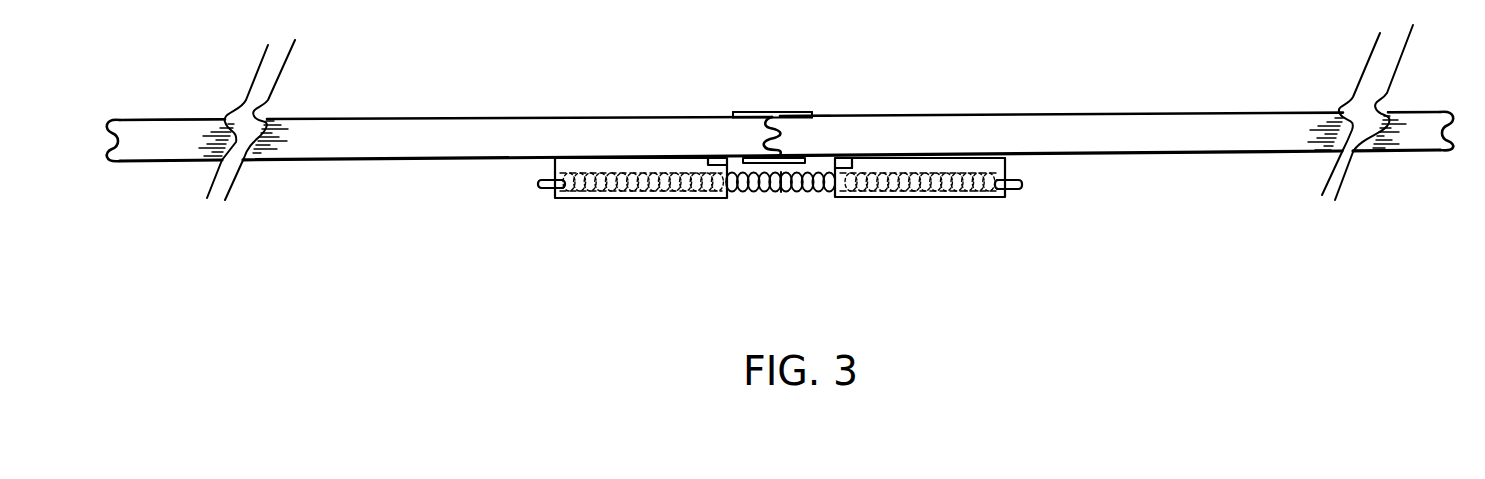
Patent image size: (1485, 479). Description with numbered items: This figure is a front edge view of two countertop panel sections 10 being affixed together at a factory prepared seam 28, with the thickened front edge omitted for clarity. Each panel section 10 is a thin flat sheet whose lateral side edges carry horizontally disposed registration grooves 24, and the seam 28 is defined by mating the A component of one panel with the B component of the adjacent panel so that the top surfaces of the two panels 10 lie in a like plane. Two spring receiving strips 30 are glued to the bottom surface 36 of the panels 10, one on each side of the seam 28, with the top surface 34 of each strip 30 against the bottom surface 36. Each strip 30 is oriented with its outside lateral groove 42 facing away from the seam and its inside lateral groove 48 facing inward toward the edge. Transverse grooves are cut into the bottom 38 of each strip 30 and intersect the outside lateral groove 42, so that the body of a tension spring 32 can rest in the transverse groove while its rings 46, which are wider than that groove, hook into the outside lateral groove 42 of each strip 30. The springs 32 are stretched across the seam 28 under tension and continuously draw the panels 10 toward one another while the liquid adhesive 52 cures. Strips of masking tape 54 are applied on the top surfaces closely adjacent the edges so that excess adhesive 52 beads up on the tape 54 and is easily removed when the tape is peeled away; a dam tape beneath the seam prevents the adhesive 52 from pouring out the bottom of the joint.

The panel section 10 is at (442, 118).
The A component of registration grooves A is at (120, 125).
The B component of registration grooves B is at (775, 111).
The registration grooves 24 is at (763, 147).
The factory prepared seam 28 is at (783, 137).
The spring receiving strip 30 is at (577, 200).
The spring 32 is at (753, 195).
The top surface of strip 34 is at (942, 156).
The bottom surface 36 is at (1250, 153).
The bottom of strip 38 is at (635, 200).
The outside lateral groove 42 is at (542, 178).
The ring 46 is at (538, 188).
The inside lateral groove 48 is at (845, 168).
The adhesive 52 is at (758, 128).
The masking tape 54 is at (743, 113).